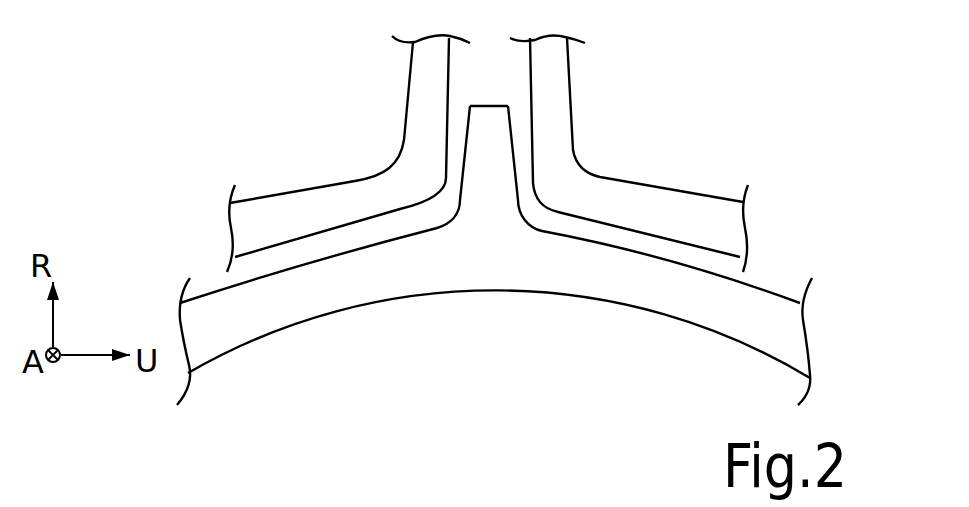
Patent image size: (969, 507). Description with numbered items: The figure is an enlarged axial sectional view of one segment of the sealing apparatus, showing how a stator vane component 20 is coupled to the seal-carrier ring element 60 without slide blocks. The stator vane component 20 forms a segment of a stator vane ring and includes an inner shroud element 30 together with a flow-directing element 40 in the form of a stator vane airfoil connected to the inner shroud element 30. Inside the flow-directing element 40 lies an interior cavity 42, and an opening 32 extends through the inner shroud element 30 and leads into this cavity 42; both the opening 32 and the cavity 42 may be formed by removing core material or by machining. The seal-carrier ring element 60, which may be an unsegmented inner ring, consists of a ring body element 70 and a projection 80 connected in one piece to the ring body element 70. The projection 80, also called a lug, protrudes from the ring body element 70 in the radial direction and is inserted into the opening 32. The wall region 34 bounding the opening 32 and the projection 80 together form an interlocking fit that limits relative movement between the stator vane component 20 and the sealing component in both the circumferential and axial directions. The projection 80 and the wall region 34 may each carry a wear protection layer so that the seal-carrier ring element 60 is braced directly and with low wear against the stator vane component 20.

The stator vane component 20 is at (398, 140).
The inner shroud element 30 is at (670, 187).
The opening 32 is at (445, 190).
The wall region 34 is at (522, 130).
The flow-directing element 40 is at (567, 63).
The cavity 42 is at (460, 68).
The seal-carrier ring element 60 is at (752, 310).
The ring body element 70 is at (712, 322).
The projection 80 is at (500, 157).